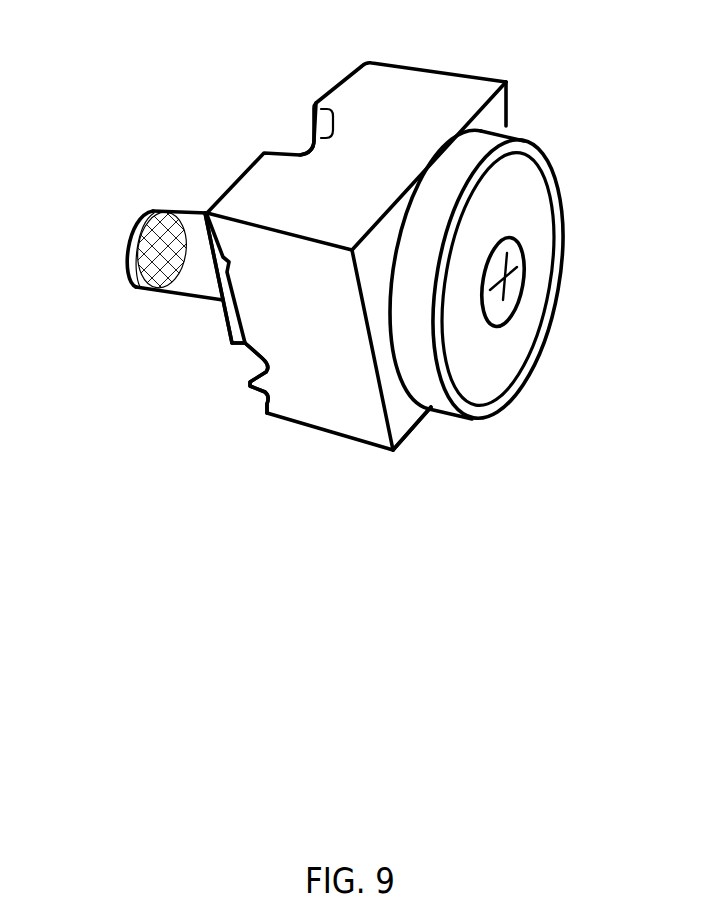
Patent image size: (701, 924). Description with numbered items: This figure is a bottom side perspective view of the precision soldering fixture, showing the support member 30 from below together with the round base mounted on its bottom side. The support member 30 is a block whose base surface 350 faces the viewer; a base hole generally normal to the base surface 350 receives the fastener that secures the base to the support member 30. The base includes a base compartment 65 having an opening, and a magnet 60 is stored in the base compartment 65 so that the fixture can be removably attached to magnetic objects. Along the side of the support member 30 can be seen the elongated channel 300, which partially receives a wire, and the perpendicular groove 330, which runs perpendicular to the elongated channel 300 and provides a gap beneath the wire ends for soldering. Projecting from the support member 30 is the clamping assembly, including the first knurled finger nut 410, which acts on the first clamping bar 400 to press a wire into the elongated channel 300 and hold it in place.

The support member 30 is at (468, 72).
The perpendicular groove 330 is at (297, 145).
The base surface 350 is at (400, 417).
The first clamping bar 400 is at (232, 341).
The elongated channel 300 is at (252, 368).
The first knurled finger nut 410 is at (137, 213).
The magnet 60 is at (510, 350).
The base compartment 65 is at (560, 207).